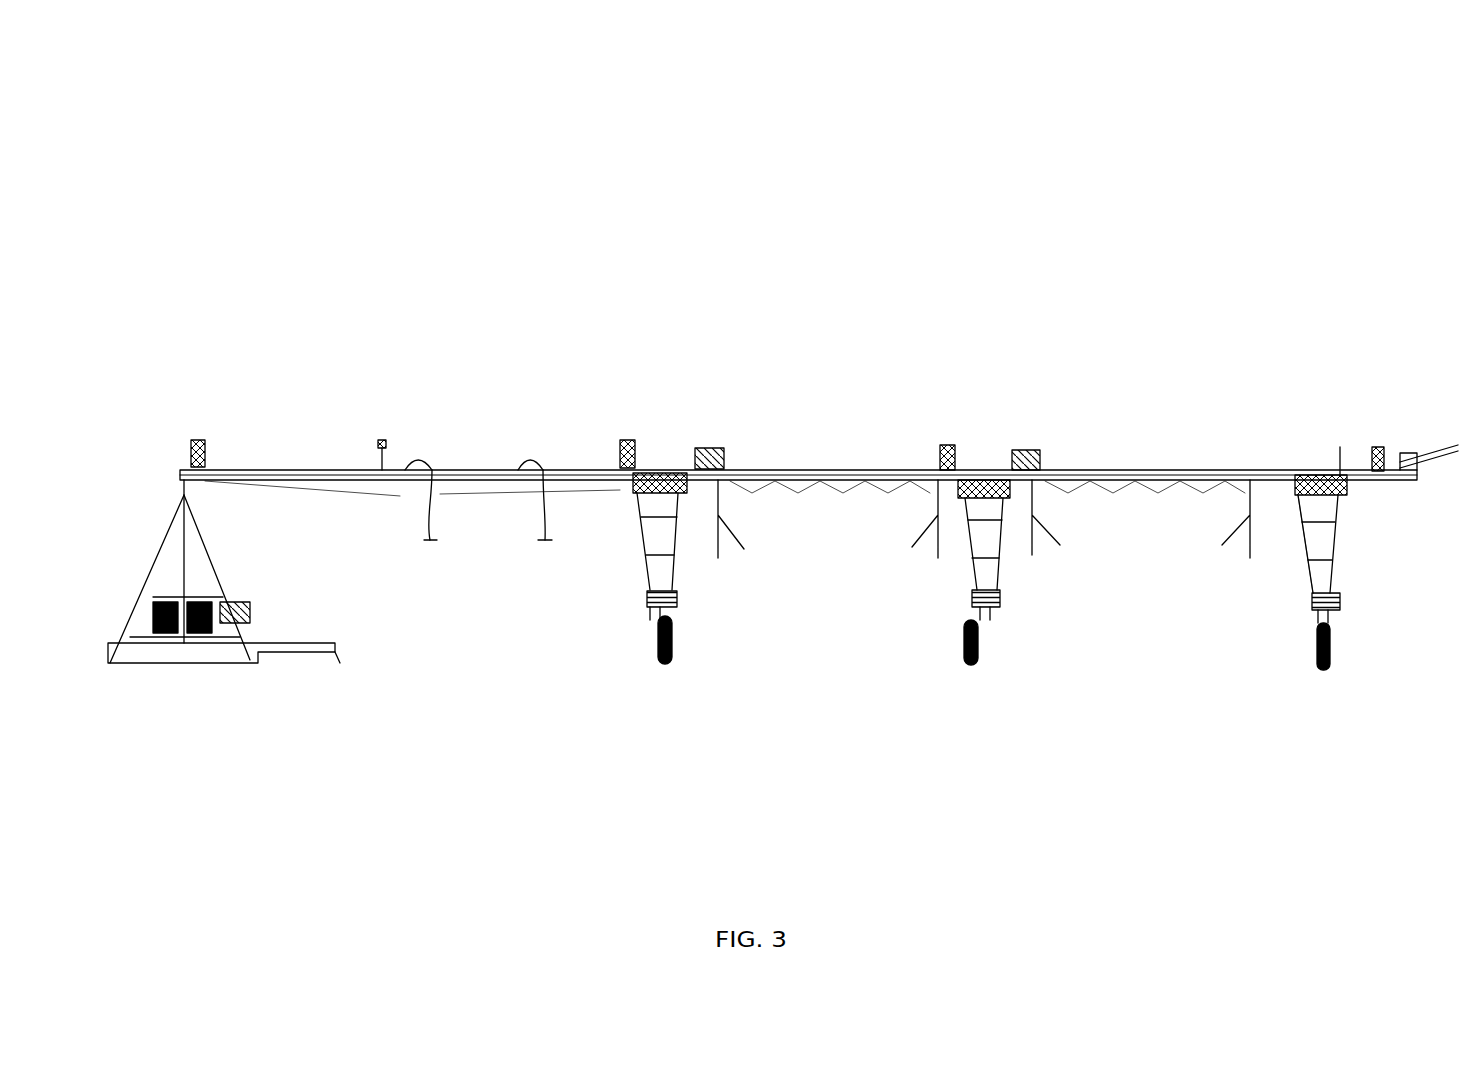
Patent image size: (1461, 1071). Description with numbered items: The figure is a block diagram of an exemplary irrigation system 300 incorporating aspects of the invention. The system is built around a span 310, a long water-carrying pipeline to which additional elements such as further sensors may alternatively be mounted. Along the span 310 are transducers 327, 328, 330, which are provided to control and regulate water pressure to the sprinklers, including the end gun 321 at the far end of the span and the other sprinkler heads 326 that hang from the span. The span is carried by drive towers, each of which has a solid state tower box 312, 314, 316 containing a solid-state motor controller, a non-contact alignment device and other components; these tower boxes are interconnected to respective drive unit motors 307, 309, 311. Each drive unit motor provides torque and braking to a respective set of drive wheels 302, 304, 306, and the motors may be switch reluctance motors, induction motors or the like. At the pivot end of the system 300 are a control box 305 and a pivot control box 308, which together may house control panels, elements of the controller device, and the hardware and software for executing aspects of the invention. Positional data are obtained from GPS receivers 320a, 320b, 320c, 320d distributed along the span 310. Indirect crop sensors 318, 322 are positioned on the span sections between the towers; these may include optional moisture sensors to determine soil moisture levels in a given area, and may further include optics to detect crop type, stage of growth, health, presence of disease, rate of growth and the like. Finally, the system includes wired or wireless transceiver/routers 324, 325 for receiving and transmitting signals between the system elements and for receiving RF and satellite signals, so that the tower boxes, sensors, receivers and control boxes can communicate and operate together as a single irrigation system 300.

The irrigation system 300 is at (812, 96).
The drive wheels 302 is at (653, 630).
The drive wheels 304 is at (968, 636).
The control box 305 is at (157, 600).
The drive wheels 306 is at (1313, 641).
The drive unit motor 307 is at (677, 597).
The pivot control box 308 is at (209, 600).
The drive unit motor 309 is at (1000, 597).
The span 310 is at (447, 468).
The drive unit motor 311 is at (1340, 600).
The solid state tower box 312 is at (655, 473).
The solid state tower box 314 is at (972, 479).
The solid state tower box 316 is at (1288, 493).
The indirect crop sensor 318 is at (913, 540).
The GPS receiver 320a is at (190, 438).
The GPS receiver 320b is at (625, 442).
The GPS receiver 320c is at (941, 445).
The GPS receiver 320d is at (1384, 447).
The end gun 321 is at (1443, 447).
The indirect crop sensor 322 is at (1228, 540).
The transceiver/router 324 is at (380, 437).
The transceiver/router 325 is at (1349, 447).
The sprinkler heads 326 is at (545, 540).
The transducer 327 is at (250, 612).
The transducer 328 is at (705, 447).
The transducer 330 is at (1028, 450).